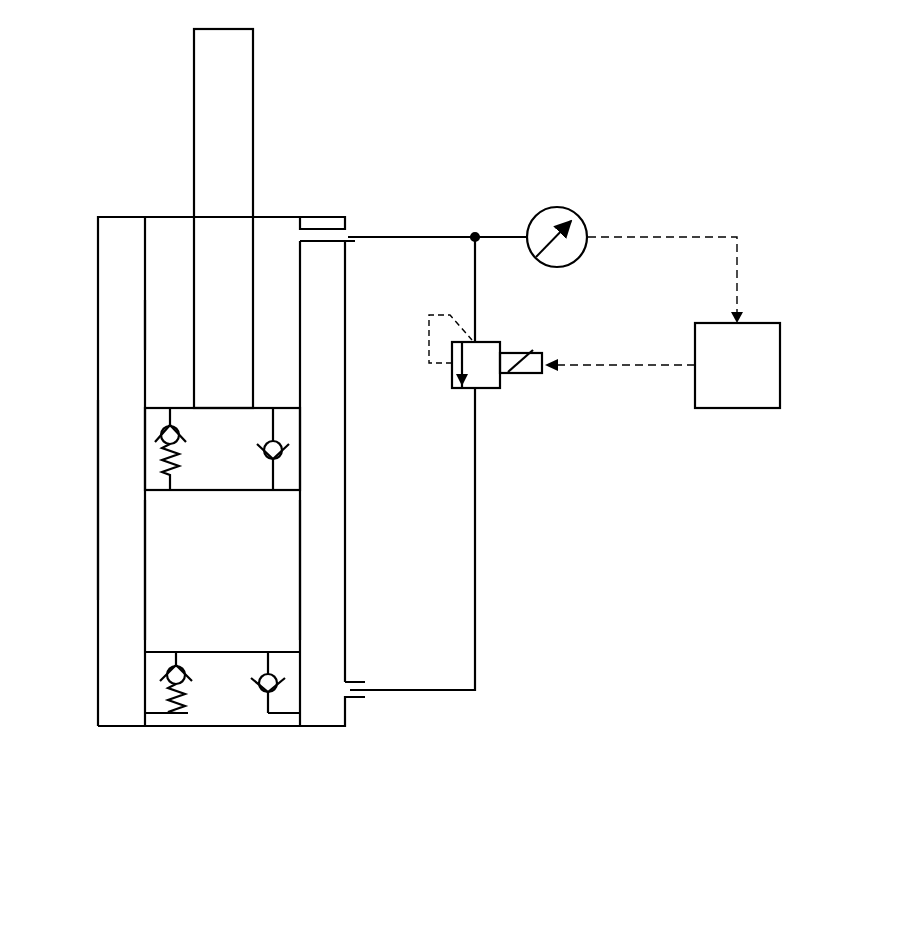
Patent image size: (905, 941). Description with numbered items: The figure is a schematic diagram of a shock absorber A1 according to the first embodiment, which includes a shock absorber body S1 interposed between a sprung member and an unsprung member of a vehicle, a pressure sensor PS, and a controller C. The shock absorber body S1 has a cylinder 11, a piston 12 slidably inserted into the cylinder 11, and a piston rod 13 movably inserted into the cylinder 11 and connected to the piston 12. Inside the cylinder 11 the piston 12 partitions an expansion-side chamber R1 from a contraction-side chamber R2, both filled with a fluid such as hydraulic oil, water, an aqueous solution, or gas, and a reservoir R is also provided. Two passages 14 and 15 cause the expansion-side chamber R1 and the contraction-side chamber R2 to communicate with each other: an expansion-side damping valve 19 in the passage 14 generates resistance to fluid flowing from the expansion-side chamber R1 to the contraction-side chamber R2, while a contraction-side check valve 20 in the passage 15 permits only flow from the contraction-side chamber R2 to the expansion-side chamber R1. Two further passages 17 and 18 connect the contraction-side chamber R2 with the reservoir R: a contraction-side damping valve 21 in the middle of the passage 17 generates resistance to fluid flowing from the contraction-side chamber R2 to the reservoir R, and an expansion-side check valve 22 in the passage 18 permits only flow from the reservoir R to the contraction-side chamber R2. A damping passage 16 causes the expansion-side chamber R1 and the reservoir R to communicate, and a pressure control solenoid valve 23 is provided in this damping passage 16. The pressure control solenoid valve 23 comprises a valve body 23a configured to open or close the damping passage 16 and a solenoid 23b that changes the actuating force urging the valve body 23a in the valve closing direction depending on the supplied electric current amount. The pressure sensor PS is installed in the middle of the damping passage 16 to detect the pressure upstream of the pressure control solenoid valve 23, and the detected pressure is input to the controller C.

The shock absorber A1 is at (116, 100).
The shock absorber body S1 is at (95, 215).
The cylinder 11 is at (147, 263).
The piston 12 is at (145, 471).
The piston rod 13 is at (254, 97).
The passage 14 is at (148, 411).
The passage 15 is at (277, 472).
The damping passage 16 is at (477, 502).
The passage 17 is at (163, 714).
The passage 18 is at (273, 714).
The expansion-side damping valve 19 is at (155, 434).
The contraction-side check valve 20 is at (284, 452).
The contraction-side damping valve 21 is at (183, 662).
The expansion-side check valve 22 is at (258, 690).
The pressure control solenoid valve 23 is at (486, 370).
The valve body 23a is at (452, 377).
The solenoid 23b is at (533, 350).
The expansion-side chamber R1 is at (170, 303).
The contraction-side chamber R2 is at (173, 550).
The reservoir R is at (127, 610).
The pressure sensor PS is at (578, 217).
The controller C is at (754, 323).